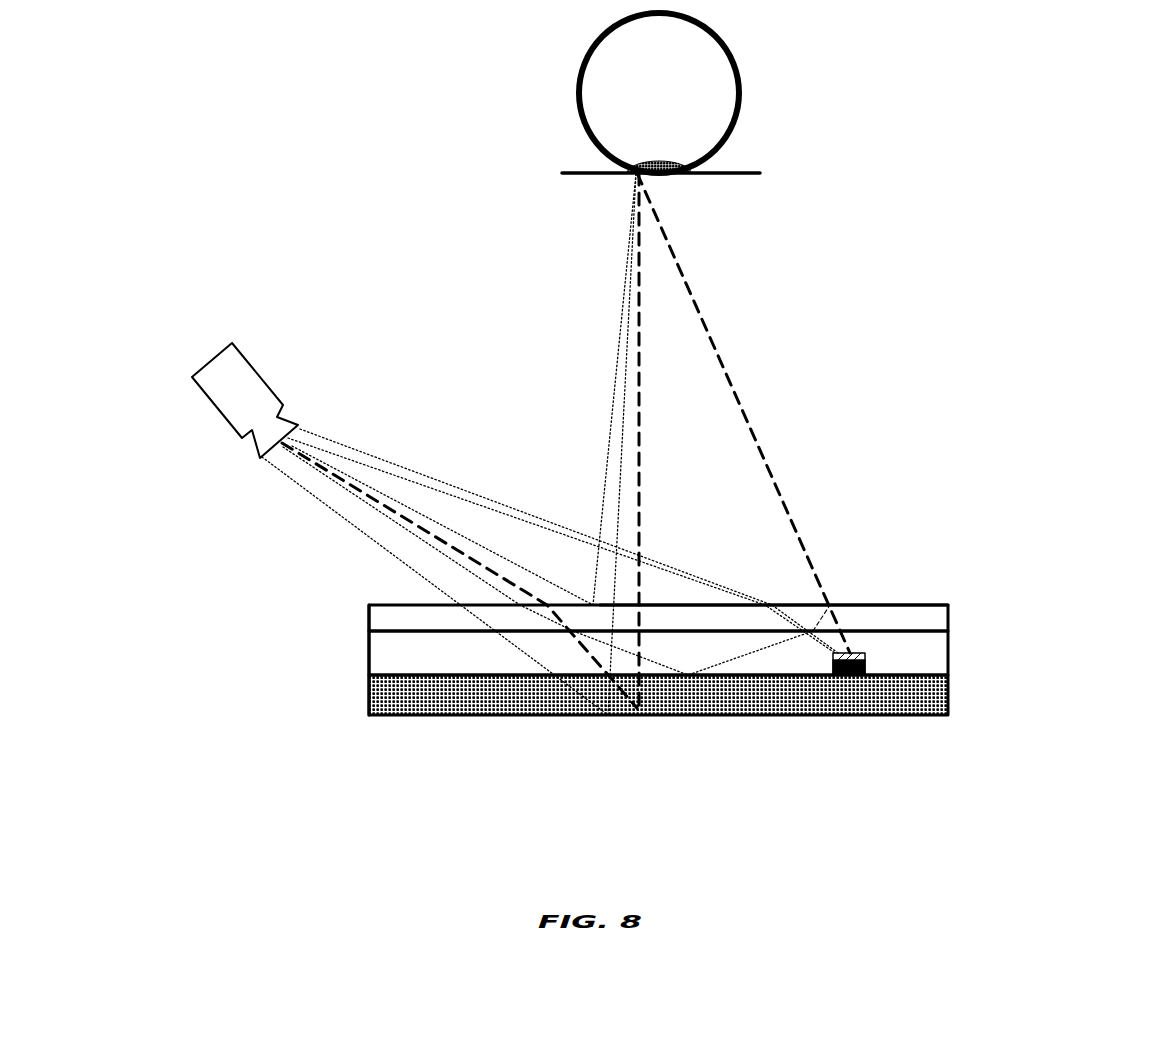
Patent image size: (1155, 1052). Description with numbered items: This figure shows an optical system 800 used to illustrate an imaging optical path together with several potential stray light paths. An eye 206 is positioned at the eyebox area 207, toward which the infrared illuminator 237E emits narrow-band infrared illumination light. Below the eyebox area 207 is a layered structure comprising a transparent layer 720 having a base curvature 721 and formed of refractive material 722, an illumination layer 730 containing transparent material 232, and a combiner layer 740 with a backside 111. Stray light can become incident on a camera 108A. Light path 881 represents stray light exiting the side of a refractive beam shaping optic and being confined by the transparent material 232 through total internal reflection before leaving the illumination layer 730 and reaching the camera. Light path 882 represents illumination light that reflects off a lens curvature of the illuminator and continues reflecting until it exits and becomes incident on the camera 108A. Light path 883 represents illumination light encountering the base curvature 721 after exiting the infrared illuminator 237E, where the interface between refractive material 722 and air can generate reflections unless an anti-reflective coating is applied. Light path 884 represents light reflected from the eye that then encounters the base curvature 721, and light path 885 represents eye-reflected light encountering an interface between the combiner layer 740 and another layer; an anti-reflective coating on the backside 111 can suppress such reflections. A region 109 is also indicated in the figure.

The optical system 800 is at (1145, 102).
The eye 206 is at (731, 62).
The eyebox area 207 is at (760, 172).
The camera 108A is at (245, 367).
The light path 881 is at (672, 662).
The light path 882 is at (508, 517).
The light path 883 is at (664, 563).
The light path 884 is at (605, 473).
The light path 885 is at (383, 548).
The transparent layer 720 is at (955, 605).
The base curvature 721 is at (369, 609).
The refractive material 722 is at (878, 630).
The illumination layer 730 is at (955, 632).
The transparent material 232 is at (926, 665).
The combiner layer 740 is at (955, 675).
The infrared illuminator 237E is at (866, 655).
The display region 109 is at (867, 430).
The backside 111 is at (477, 760).